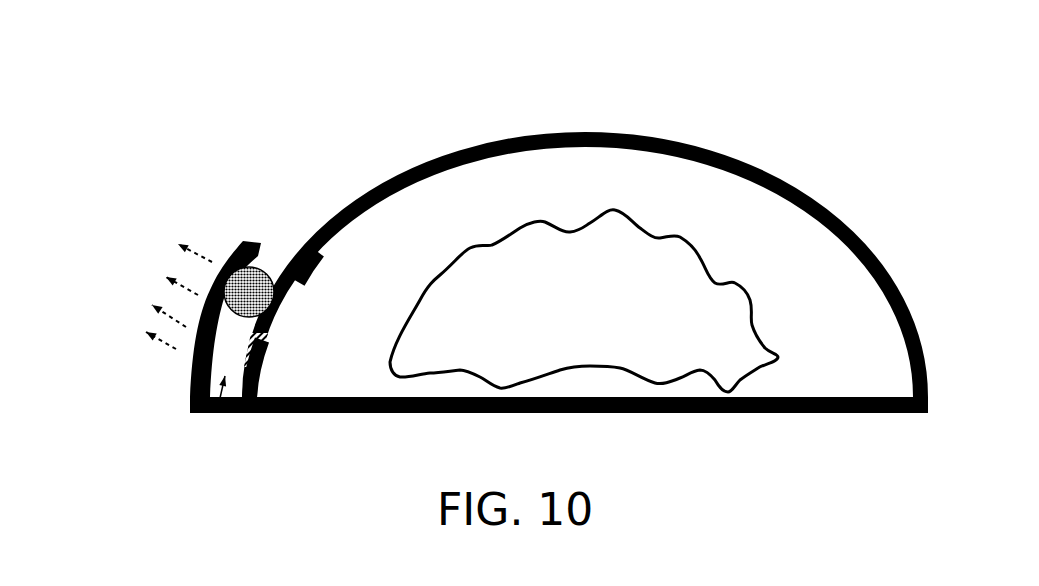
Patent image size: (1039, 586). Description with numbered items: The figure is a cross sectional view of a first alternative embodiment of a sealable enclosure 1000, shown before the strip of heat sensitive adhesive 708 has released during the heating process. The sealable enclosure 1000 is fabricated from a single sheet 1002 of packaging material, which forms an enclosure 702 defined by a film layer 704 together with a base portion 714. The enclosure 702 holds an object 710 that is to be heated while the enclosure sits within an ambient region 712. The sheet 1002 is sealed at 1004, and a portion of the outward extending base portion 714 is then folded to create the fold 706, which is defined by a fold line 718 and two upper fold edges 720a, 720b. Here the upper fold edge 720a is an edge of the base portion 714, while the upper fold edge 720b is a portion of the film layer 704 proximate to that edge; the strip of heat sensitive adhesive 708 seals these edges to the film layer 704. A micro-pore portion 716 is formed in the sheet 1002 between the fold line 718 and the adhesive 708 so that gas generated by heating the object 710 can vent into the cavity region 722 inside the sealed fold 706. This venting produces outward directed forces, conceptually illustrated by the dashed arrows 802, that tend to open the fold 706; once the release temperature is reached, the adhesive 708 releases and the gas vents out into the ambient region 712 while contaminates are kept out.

The sealable enclosure 1000 is at (475, 261).
The enclosure 702 is at (495, 302).
The film layer 704 is at (512, 142).
The fold 706 is at (117, 266).
The strip of heat sensitive adhesive 708 is at (275, 267).
The object 710 is at (584, 301).
The ambient region 712 is at (127, 45).
The base portion 714 is at (370, 413).
The micro-pore portion 716 is at (266, 350).
The fold line 718 is at (190, 410).
The upper fold edge 720a is at (250, 243).
The upper fold edge 720b is at (363, 273).
The cavity region 722 is at (217, 413).
The dashed arrows 802 is at (130, 352).
The sheet 1002 is at (559, 460).
The seal location 1004 is at (260, 413).